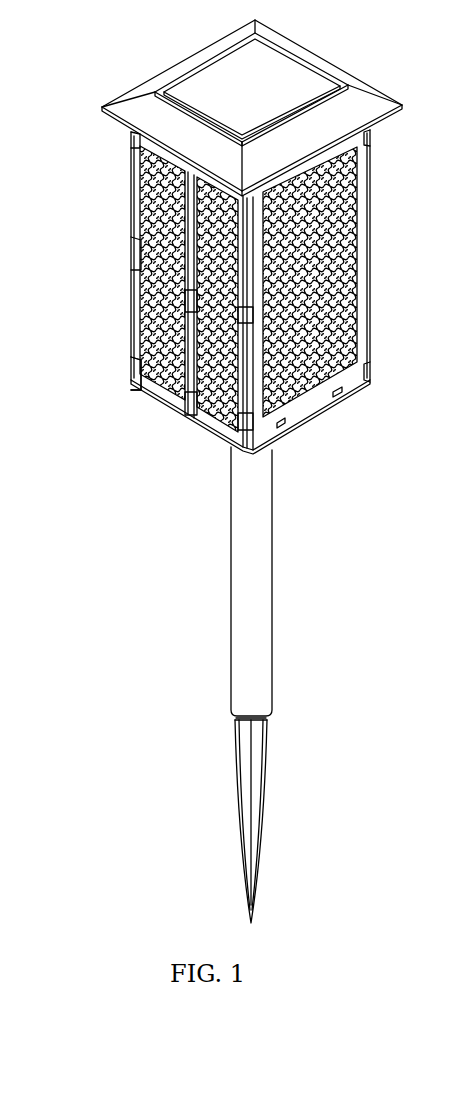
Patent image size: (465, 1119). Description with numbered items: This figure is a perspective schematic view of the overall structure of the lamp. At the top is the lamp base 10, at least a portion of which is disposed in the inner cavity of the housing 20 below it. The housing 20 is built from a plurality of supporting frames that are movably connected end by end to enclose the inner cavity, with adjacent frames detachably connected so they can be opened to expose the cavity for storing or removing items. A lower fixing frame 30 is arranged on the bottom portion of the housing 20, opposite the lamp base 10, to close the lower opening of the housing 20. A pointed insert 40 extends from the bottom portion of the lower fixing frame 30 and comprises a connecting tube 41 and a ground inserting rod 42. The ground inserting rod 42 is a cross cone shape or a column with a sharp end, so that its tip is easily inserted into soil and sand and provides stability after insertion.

The lamp base 10 is at (200, 42).
The housing 20 is at (127, 215).
The lower fixing frame 30 is at (133, 387).
The pointed insert 40 is at (174, 685).
The connecting tube 41 is at (231, 572).
The ground inserting rod 42 is at (201, 821).